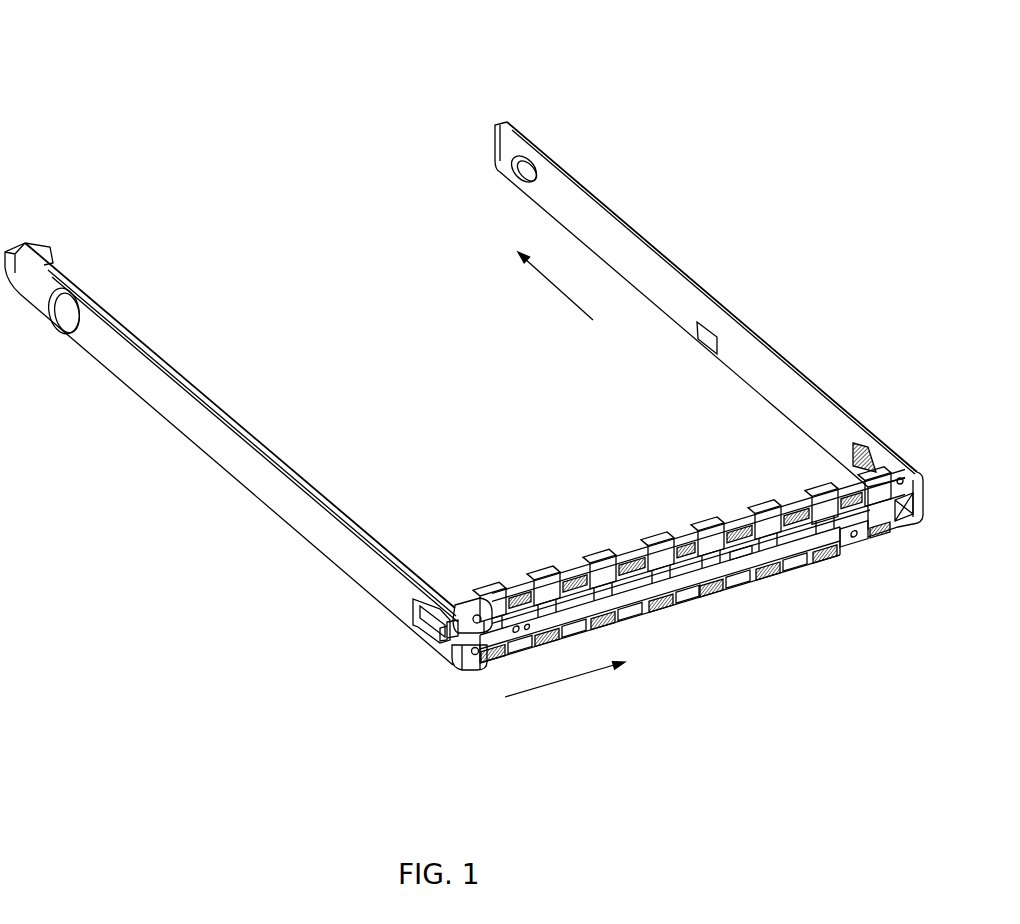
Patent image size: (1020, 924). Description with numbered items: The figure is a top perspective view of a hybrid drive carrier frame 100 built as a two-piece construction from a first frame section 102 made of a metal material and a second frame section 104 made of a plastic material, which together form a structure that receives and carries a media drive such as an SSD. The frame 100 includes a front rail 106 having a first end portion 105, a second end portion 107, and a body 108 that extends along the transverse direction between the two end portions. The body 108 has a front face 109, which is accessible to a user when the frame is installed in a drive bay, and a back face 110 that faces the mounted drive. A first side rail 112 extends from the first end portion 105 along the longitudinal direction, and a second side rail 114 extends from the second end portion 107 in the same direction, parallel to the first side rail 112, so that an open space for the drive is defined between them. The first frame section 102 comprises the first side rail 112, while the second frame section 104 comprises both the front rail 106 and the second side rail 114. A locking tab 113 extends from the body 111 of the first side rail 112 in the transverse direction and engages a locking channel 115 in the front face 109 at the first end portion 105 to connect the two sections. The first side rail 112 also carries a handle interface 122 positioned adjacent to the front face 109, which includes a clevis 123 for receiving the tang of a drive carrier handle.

The hybrid drive carrier frame 100 is at (200, 97).
The first frame section 102 is at (231, 454).
The second frame section 104 is at (709, 329).
The first end portion 105 is at (477, 598).
The front rail 106 is at (686, 585).
The second end portion 107 is at (877, 537).
The body 108 is at (740, 560).
The front face 109 is at (780, 553).
The back face 110 is at (627, 550).
The body 111 is at (177, 387).
The first side rail 112 is at (197, 445).
The locking tab 113 is at (473, 677).
The second side rail 114 is at (632, 228).
The locking channel 115 is at (517, 590).
The handle interface 122 is at (402, 650).
The clevis 123 is at (447, 627).